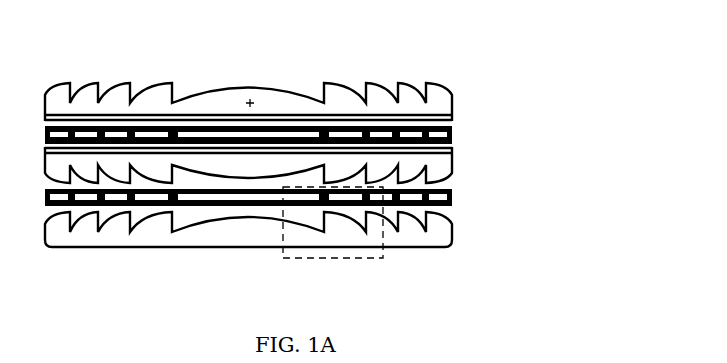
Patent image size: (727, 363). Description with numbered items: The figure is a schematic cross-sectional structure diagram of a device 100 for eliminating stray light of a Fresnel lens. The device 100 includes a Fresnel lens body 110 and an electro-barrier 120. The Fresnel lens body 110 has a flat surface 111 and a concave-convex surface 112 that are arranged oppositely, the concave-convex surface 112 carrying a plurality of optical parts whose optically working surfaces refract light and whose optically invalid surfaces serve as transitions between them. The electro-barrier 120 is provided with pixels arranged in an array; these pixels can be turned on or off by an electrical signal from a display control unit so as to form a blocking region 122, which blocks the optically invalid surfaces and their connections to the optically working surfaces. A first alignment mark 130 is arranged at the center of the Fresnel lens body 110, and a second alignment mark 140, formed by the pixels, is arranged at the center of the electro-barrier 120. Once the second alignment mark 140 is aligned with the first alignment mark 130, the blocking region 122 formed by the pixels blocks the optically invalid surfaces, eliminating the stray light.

The device 100 is at (283, 18).
The Fresnel lens body 110 is at (290, 74).
The flat surface 111 is at (248, 252).
The concave-convex surface 112 is at (248, 74).
The electro-barrier 120 is at (290, 178).
The blocking region 122 is at (290, 121).
The first alignment mark 130 is at (301, 65).
The second alignment mark 140 is at (311, 94).